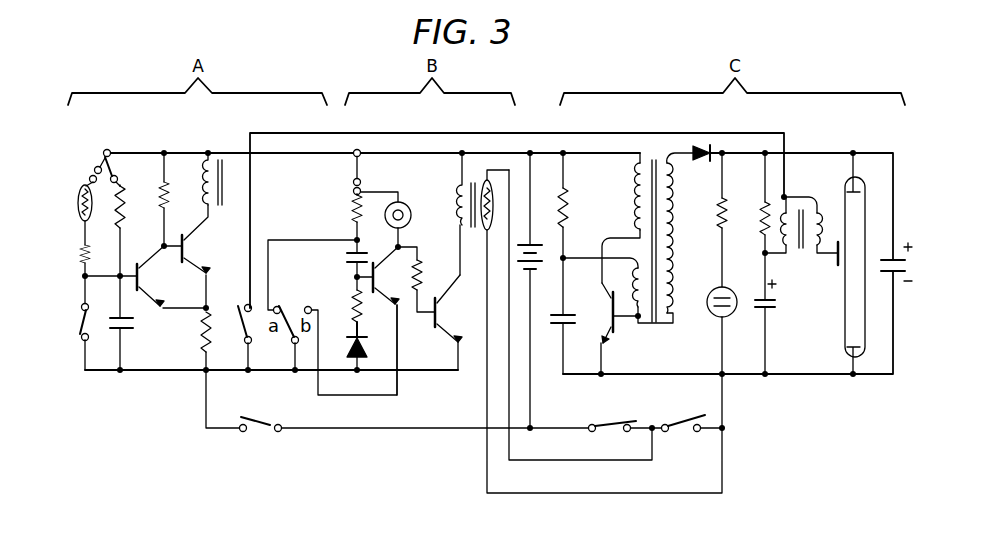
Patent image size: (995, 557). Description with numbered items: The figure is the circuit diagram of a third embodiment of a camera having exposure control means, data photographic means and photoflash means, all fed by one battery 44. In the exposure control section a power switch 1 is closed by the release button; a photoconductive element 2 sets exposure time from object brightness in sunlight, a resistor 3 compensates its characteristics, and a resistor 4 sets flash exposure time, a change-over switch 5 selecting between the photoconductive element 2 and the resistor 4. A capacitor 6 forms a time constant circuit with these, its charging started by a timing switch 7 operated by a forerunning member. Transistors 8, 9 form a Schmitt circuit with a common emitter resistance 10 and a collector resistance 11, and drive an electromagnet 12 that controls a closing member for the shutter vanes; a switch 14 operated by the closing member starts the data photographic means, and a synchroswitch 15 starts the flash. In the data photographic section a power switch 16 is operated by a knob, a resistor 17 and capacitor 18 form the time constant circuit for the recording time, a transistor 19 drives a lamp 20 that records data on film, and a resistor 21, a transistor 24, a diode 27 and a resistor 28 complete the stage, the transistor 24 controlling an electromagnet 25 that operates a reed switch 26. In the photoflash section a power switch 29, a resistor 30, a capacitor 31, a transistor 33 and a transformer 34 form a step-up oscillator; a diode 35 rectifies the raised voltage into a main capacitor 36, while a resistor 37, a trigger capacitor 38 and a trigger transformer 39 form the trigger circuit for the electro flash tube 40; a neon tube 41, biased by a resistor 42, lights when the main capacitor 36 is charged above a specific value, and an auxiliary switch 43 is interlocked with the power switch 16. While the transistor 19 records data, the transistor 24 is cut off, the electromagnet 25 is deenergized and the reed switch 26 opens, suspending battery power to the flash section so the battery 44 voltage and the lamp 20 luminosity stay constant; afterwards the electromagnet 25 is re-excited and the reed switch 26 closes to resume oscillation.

The power switch 1 is at (268, 428).
The photoconductive element 2 is at (76, 204).
The resistor 3 is at (76, 252).
The resistor 4 is at (123, 214).
The change-over switch 5 is at (104, 156).
The capacitor 6 is at (124, 329).
The timing switch 7 is at (81, 324).
The transistor 8 is at (141, 279).
The transistor 9 is at (186, 249).
The emitter resistance 10 is at (202, 336).
The collector resistance 11 is at (167, 196).
The electromagnet 12 is at (220, 207).
The switch 14 is at (300, 300).
The synchroswitch 15 is at (240, 303).
The power switch 16 is at (361, 169).
The resistor 17 is at (351, 208).
The capacitor 18 is at (347, 260).
The transistor 19 is at (376, 281).
The lamp 20 is at (410, 207).
The resistor 21 is at (422, 281).
The transistor 24 is at (440, 309).
The electromagnet 25 is at (457, 224).
The reed switch 26 is at (483, 216).
The diode 27 is at (346, 372).
The resistor 28 is at (362, 315).
The power switch 29 is at (601, 426).
The resistor 30 is at (569, 208).
The capacitor 31 is at (557, 324).
The transistor 33 is at (612, 318).
The transformer 34 is at (643, 326).
The diode 35 is at (701, 161).
The main capacitor 36 is at (880, 274).
The resistor 37 is at (762, 209).
The trigger capacitor 38 is at (772, 308).
The trigger transformer 39 is at (789, 199).
The electro flash tube 40 is at (862, 206).
The neon tube 41 is at (712, 311).
The resistor 42 is at (718, 224).
The auxiliary switch 43 is at (672, 426).
The battery 44 is at (542, 264).